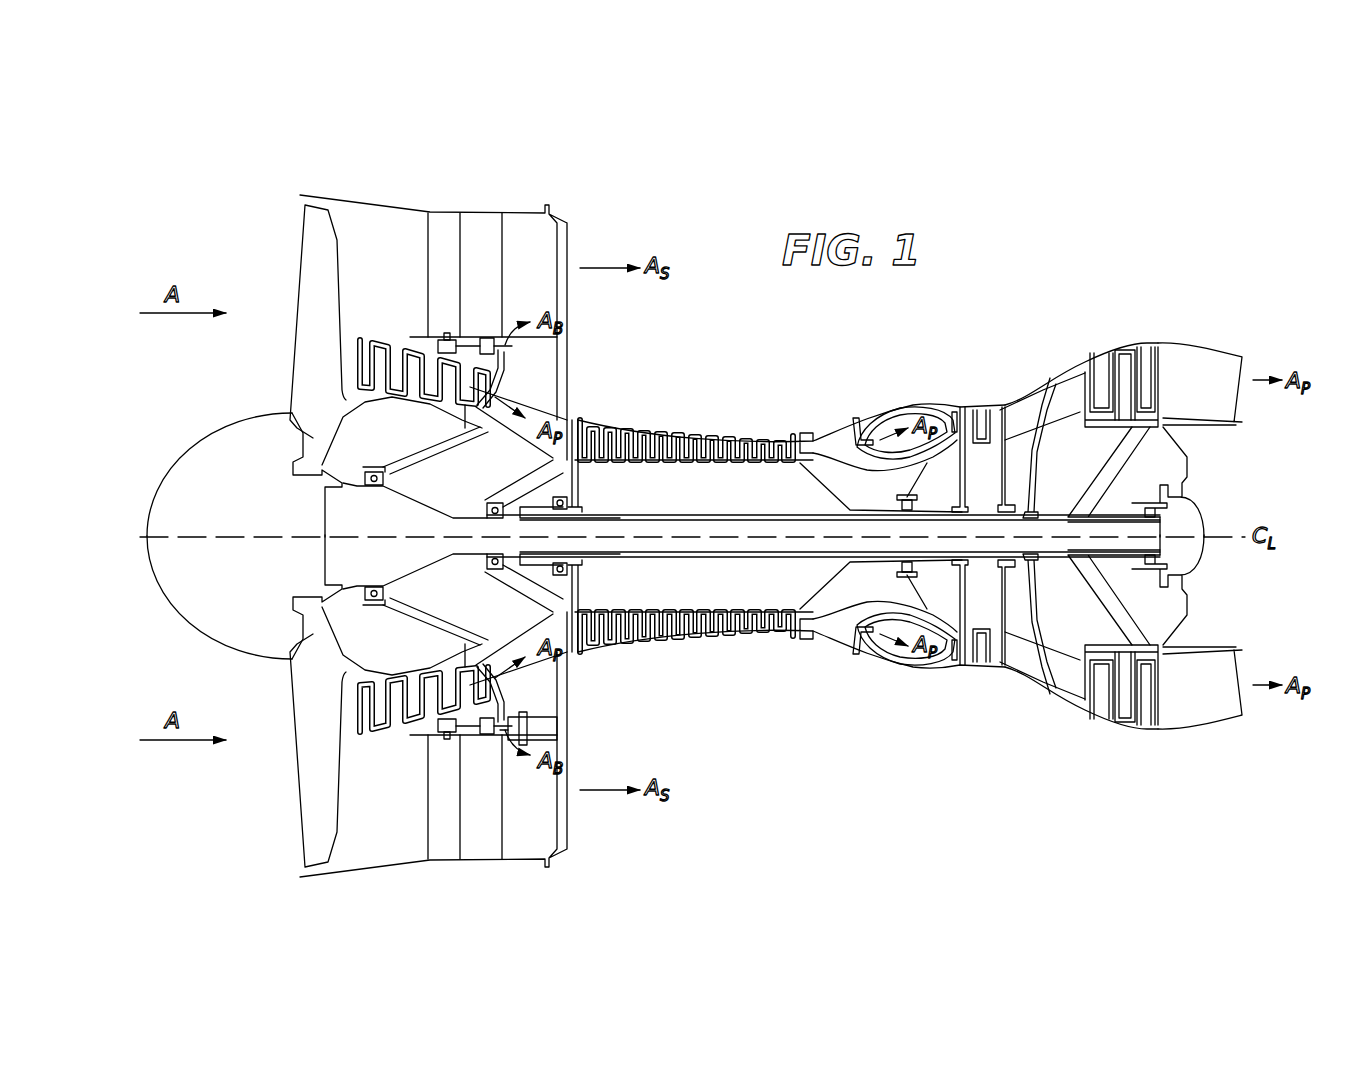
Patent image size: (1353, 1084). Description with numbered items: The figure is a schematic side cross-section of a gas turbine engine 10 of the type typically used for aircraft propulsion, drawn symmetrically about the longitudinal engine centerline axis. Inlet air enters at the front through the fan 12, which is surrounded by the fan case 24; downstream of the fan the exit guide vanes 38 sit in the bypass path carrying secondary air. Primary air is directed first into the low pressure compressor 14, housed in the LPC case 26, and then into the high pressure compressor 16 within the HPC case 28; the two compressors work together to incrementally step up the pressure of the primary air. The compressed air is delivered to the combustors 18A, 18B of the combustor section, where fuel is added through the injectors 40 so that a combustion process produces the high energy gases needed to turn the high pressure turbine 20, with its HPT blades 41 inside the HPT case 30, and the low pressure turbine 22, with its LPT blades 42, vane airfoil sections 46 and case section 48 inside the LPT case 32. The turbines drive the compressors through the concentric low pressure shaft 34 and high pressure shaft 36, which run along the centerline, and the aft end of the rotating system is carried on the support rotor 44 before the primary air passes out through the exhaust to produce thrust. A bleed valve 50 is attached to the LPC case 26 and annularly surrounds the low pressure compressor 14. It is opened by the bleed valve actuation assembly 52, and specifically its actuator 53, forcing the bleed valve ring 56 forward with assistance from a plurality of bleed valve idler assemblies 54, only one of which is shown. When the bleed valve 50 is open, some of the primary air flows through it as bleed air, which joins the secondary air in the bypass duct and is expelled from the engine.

The gas turbine engine 10 is at (1036, 268).
The fan 12 is at (300, 791).
The low pressure compressor 14 is at (421, 735).
The high pressure compressor 16 is at (735, 658).
The combustor 18A is at (893, 650).
The combustor 18B is at (935, 415).
The high pressure turbine 20 is at (969, 682).
The low pressure turbine 22 is at (1094, 736).
The fan case 24 is at (405, 210).
The LPC case 26 is at (412, 345).
The HPC case 28 is at (705, 435).
The HPT case 30 is at (1013, 398).
The LPT case 32 is at (1155, 340).
The low pressure shaft 34 is at (775, 530).
The high pressure shaft 36 is at (852, 636).
The exit guide vanes 38 is at (490, 302).
The injectors 40 is at (858, 418).
The HPT blades 41 is at (995, 664).
The LPT blades 42 is at (1090, 385).
The support rotor 44 is at (1095, 467).
The vane airfoil sections 46 is at (1105, 375).
The case section 48 is at (1117, 345).
The bleed valve 50 is at (530, 373).
The bleed valve actuation assembly 52 is at (550, 712).
The actuator 53 is at (557, 725).
The bleed valve idler assembly 54 is at (455, 340).
The bleed valve ring 56 is at (490, 345).